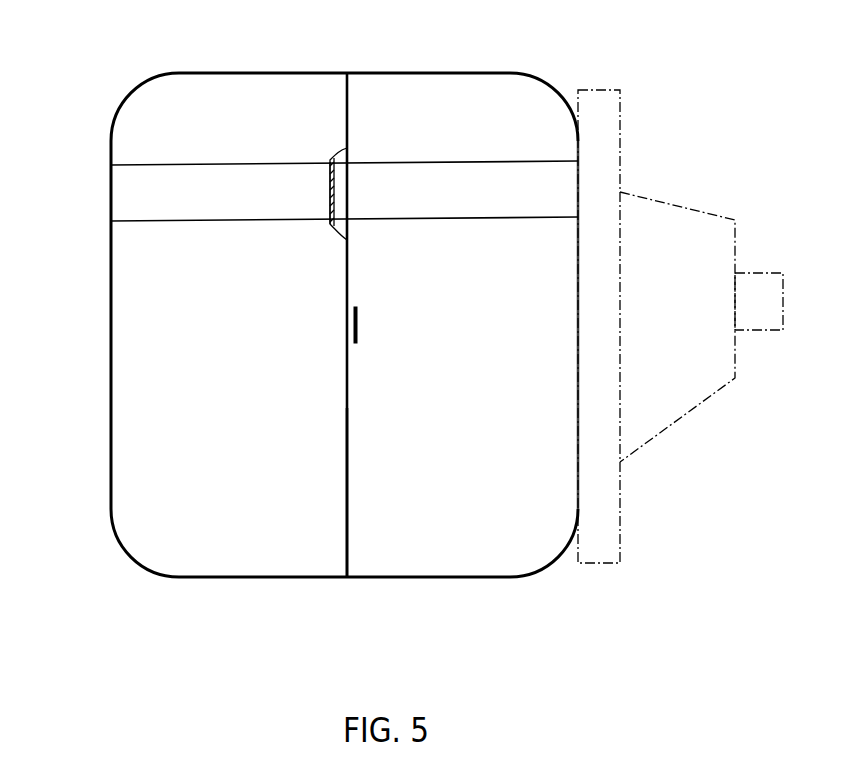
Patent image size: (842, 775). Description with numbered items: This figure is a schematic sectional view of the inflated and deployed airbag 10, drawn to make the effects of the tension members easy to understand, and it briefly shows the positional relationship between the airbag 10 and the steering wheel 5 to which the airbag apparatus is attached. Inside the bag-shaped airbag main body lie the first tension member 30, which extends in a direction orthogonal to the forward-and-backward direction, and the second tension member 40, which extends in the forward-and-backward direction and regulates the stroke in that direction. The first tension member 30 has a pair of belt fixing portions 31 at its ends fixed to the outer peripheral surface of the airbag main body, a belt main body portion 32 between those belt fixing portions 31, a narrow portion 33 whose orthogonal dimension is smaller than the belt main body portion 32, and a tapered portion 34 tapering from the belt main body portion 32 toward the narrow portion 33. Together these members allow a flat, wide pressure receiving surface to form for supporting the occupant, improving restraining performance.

The airbag 10 is at (119, 86).
The second tension member 40 is at (170, 154).
The belt fixing portions 31 is at (366, 84).
The belt main body portion 32 is at (345, 408).
The first tension member 30 is at (360, 505).
The narrow portion 33 is at (325, 190).
The tapered portion 34 is at (338, 150).
The steering wheel 5 is at (678, 204).